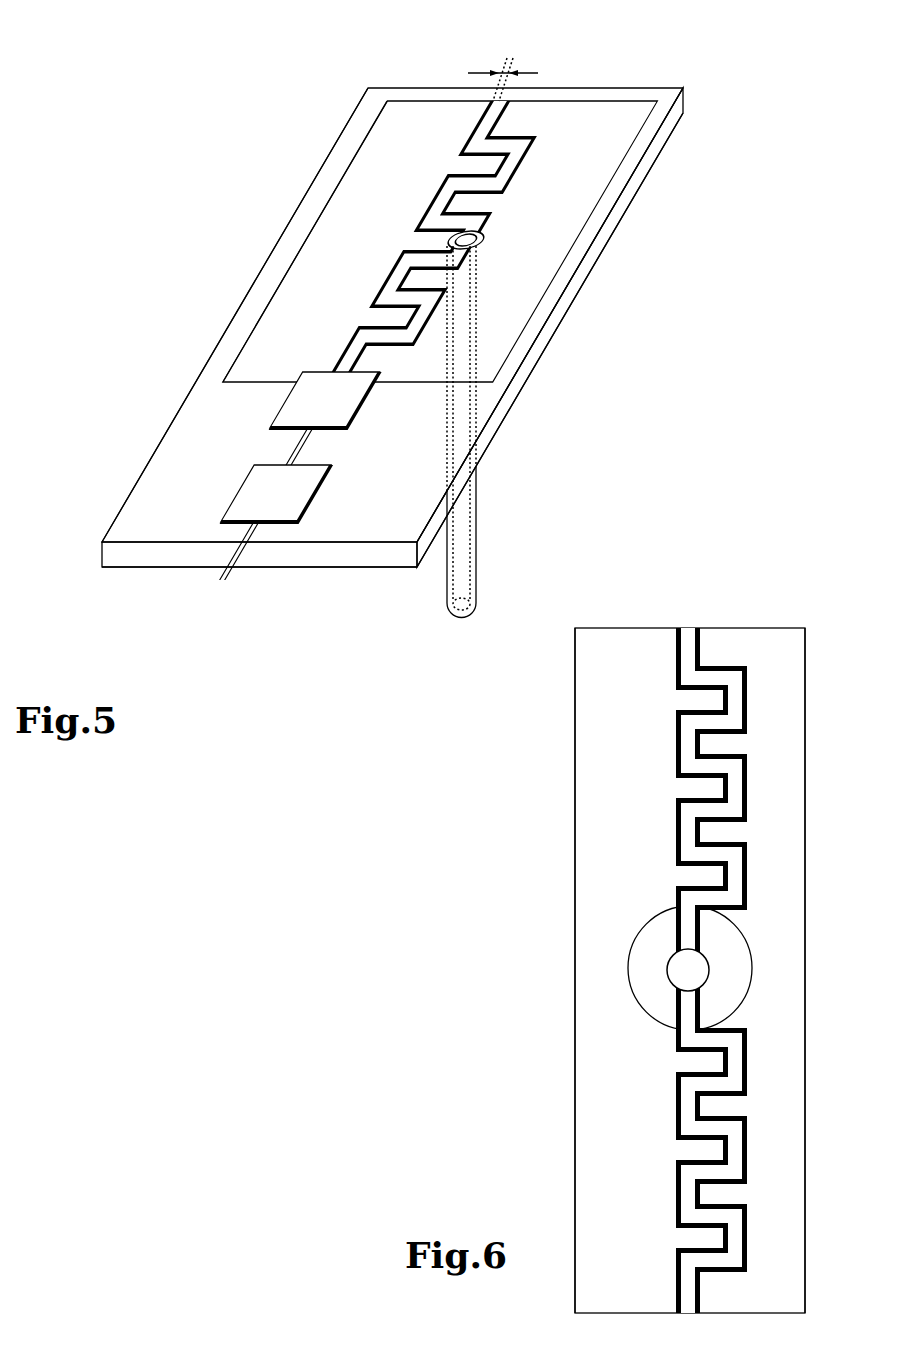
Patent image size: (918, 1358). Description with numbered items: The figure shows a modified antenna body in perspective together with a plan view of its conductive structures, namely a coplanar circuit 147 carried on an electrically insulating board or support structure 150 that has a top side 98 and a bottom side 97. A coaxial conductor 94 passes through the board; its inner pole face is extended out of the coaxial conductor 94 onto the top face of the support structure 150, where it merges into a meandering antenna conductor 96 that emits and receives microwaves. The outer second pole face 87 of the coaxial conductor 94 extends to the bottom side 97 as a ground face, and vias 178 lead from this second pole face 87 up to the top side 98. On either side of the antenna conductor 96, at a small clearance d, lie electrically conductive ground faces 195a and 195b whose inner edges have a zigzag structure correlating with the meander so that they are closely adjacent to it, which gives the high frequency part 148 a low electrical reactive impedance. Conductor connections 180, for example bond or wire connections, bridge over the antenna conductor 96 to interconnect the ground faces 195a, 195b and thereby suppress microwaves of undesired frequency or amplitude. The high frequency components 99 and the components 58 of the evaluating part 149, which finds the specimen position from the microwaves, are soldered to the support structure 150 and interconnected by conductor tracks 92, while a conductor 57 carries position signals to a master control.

In FIG. 5, the coplanar circuit 147 is at (298, 174).
In FIG. 5, the high frequency part 148 is at (368, 163).
In FIG. 6, the high frequency part 148 is at (562, 1017).
In FIG. 5, the evaluating part 149 is at (147, 473).
In FIG. 5, the support structure 150 is at (565, 300).
In FIG. 5, the ground face 195a is at (300, 263).
In FIG. 6, the ground face 195a is at (580, 740).
In FIG. 5, the ground face 195b is at (505, 328).
In FIG. 6, the ground face 195b is at (755, 638).
In FIG. 5, the antenna conductor 96 is at (490, 112).
In FIG. 5, the conductor connections 180 is at (486, 172).
In FIG. 6, the conductor connections 180 is at (710, 790).
In FIG. 5, the vias 178 is at (476, 242).
In FIG. 6, the vias 178 is at (638, 935).
In FIG. 6, the second pole face 87 is at (712, 973).
In FIG. 5, the coaxial conductor 94 is at (462, 569).
In FIG. 5, the clearance d is at (509, 62).
In FIG. 5, the top side 98 is at (208, 383).
In FIG. 5, the bottom side 97 is at (312, 568).
In FIG. 5, the components 99 is at (285, 422).
In FIG. 5, the conductor tracks 92 is at (308, 440).
In FIG. 5, the components 58 is at (250, 498).
In FIG. 5, the conductor 57 is at (222, 582).